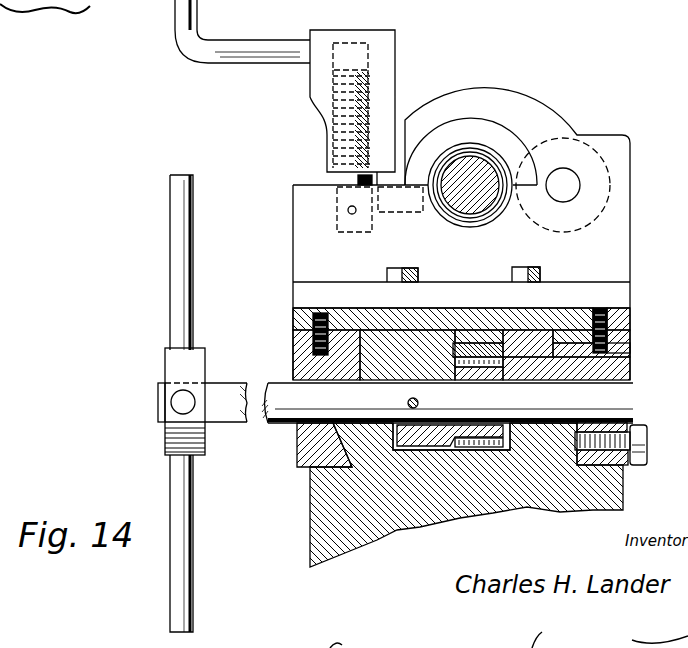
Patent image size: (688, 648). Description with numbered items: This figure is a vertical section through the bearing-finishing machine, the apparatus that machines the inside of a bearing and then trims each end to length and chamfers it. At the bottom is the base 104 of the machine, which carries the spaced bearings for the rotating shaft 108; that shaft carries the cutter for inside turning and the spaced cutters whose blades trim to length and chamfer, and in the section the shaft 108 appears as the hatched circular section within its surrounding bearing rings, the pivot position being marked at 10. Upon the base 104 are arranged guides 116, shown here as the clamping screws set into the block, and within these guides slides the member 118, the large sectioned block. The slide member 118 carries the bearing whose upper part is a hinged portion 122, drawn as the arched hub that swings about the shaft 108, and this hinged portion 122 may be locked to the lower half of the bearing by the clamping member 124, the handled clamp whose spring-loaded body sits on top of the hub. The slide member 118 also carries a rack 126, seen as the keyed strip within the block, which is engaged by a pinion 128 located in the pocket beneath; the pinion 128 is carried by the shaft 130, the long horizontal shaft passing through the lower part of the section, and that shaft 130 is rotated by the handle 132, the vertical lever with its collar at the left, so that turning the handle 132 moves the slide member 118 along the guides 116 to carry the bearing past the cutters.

The pivot shaft 10 is at (488, 215).
The base 104 is at (612, 485).
The rotating shaft 108 is at (495, 167).
The guides 116 is at (610, 341).
The slide member 118 is at (465, 323).
The hinged portion 122 is at (483, 107).
The clamping member 124 is at (318, 100).
The rack 126 is at (483, 357).
The pinion 128 is at (487, 448).
The shaft 130 is at (285, 424).
The handle 132 is at (168, 448).